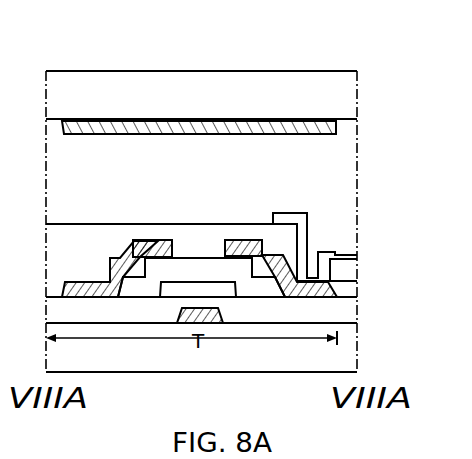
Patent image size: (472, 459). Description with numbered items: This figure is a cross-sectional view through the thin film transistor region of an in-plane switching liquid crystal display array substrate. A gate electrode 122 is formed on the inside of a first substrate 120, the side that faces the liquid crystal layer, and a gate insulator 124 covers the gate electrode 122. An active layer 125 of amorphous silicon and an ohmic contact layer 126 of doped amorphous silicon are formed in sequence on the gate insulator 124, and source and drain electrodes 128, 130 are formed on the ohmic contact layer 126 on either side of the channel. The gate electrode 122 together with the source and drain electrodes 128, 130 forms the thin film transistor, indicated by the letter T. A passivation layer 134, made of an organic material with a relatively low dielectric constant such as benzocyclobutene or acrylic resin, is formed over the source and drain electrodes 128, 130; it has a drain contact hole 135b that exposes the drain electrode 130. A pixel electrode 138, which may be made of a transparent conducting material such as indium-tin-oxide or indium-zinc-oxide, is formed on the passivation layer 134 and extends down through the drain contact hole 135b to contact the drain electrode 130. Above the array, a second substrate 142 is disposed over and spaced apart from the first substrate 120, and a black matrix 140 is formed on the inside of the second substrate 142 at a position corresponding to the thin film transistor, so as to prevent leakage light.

The first substrate 120 is at (282, 367).
The gate electrode 122 is at (180, 325).
The gate insulator 124 is at (352, 314).
The active layer 125 is at (197, 262).
The ohmic contact layer 126 is at (158, 239).
The source electrode 128 is at (121, 257).
The drain electrode 130 is at (236, 240).
The passivation layer 134 is at (68, 222).
The drain contact hole 135b is at (314, 243).
The pixel electrode 138 is at (334, 252).
The black matrix 140 is at (131, 125).
The second substrate 142 is at (226, 87).